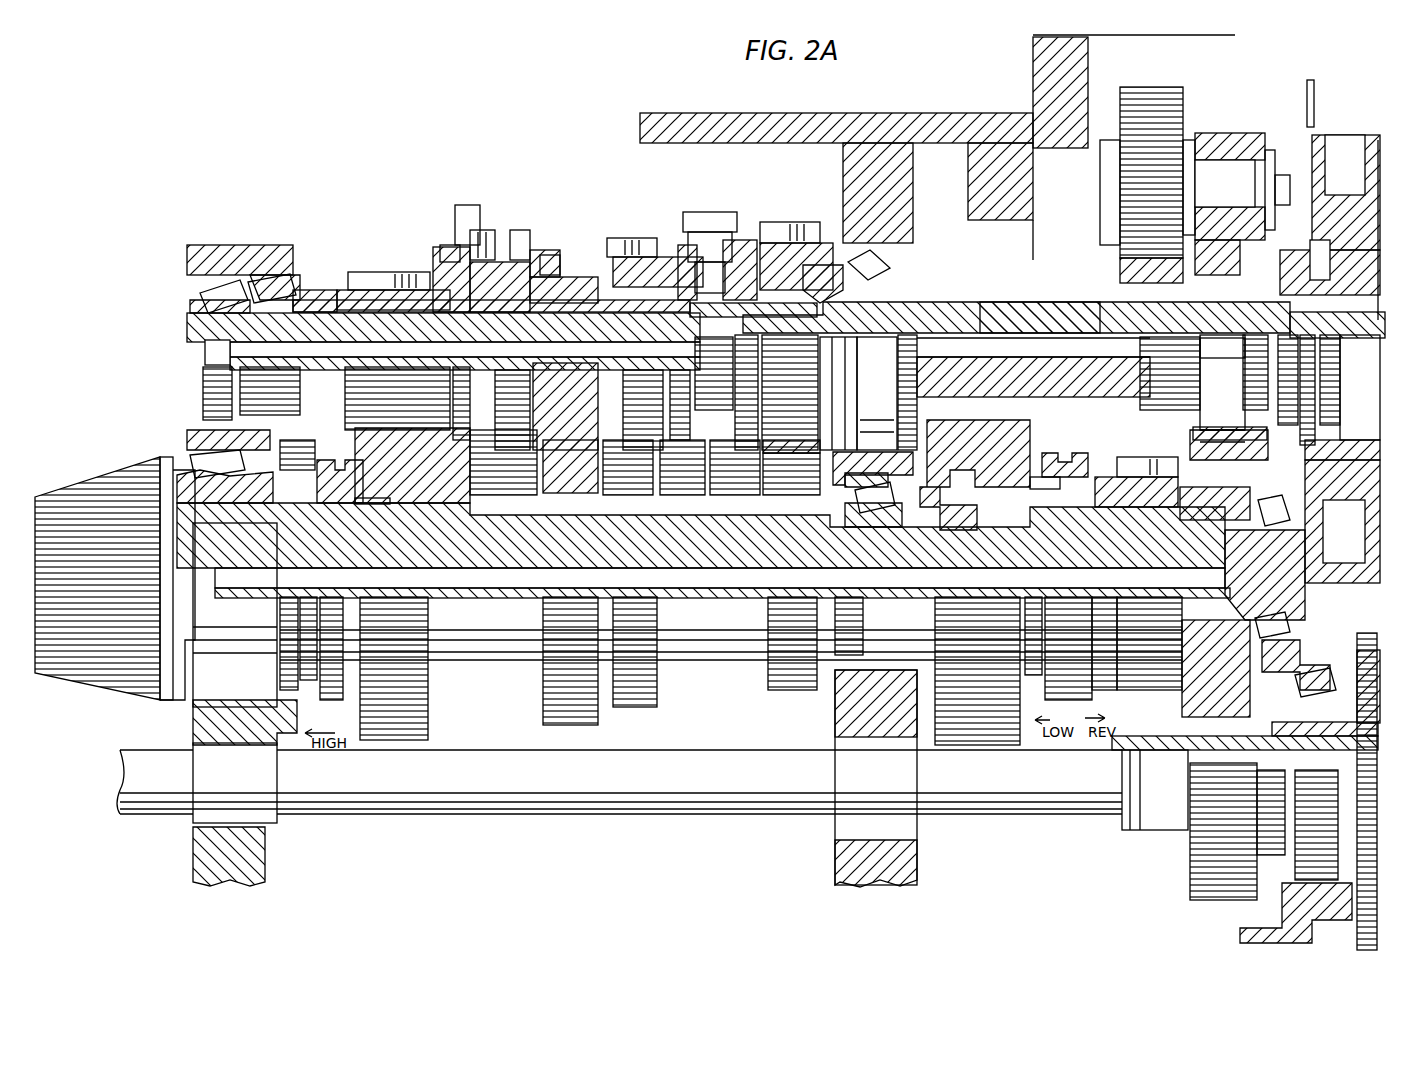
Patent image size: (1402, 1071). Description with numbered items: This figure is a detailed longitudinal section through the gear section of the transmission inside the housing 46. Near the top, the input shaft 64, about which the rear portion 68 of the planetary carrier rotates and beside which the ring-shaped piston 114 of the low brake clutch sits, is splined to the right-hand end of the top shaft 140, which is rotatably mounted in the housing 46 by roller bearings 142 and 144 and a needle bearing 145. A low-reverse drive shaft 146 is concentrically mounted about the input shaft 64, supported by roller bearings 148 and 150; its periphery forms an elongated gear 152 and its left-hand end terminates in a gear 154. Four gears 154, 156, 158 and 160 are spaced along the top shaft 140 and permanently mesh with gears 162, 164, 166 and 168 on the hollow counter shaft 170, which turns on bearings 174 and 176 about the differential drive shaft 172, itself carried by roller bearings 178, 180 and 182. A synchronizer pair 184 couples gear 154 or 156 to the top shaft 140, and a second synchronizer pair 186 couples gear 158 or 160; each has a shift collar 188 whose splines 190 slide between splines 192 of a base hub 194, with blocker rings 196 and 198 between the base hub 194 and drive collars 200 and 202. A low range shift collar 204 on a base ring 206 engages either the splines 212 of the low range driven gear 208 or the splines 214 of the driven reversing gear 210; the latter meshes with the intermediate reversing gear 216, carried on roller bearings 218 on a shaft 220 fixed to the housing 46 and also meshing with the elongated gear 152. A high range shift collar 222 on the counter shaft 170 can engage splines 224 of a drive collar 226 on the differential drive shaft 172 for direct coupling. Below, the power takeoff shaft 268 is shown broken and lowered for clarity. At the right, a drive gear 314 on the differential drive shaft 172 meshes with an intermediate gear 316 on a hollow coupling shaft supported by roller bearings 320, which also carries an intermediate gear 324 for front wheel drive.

The housing 46 is at (240, 245).
The input shaft 64 is at (972, 302).
The rear portion 68 is at (1337, 324).
The piston 114 is at (1352, 135).
The top shaft 140 is at (322, 305).
The roller bearings 142 is at (283, 245).
The roller bearings 144 is at (205, 295).
The needle bearing 145 is at (812, 265).
The low-reverse drive shaft 146 is at (1040, 302).
The roller bearings 148 is at (1260, 397).
The roller bearings 150 is at (859, 393).
The elongated gear 152 is at (922, 302).
The gear 154 is at (790, 222).
The gear 156 is at (628, 240).
The gear 158 is at (585, 276).
The gear 160 is at (358, 272).
The gear 162 is at (795, 690).
The gear 164 is at (630, 705).
The gear 166 is at (543, 720).
The gear 168 is at (430, 704).
The counter shaft 170 is at (708, 500).
The differential drive shaft 172 is at (701, 535).
The bearings 174 is at (790, 510).
The bearings 176 is at (370, 514).
The roller bearings 178 is at (192, 460).
The roller bearings 180 is at (900, 478).
The roller bearings 182 is at (1265, 535).
The synchronizer pair 184 is at (695, 212).
The second synchronizer pair 186 is at (505, 172).
The shift collar 188 is at (456, 205).
The splines 190 is at (525, 232).
The splines 192 is at (481, 230).
The base hub 194 is at (443, 327).
The blocker ring 196 is at (445, 245).
The blocker ring 198 is at (545, 250).
The drive collar 200 is at (432, 248).
The drive collar 202 is at (542, 258).
The low range shift collar 204 is at (1088, 456).
The base ring 206 is at (1040, 477).
The low range driven gear 208 is at (965, 490).
The driven reversing gear 210 is at (1145, 457).
The splines 212 is at (1035, 678).
The splines 214 is at (1112, 672).
The intermediate reversing gear 216 is at (1183, 92).
The roller bearings 218 is at (1160, 145).
The shaft 220 is at (1225, 183).
The high range shift collar 222 is at (345, 690).
The splines 224 is at (305, 470).
The drive collar 226 is at (280, 614).
The power takeoff shaft 268 is at (619, 814).
The drive gear 314 is at (1224, 475).
The intermediate gear 316 is at (1190, 866).
The roller bearings 320 is at (1318, 650).
The intermediate gear 324 is at (1360, 635).